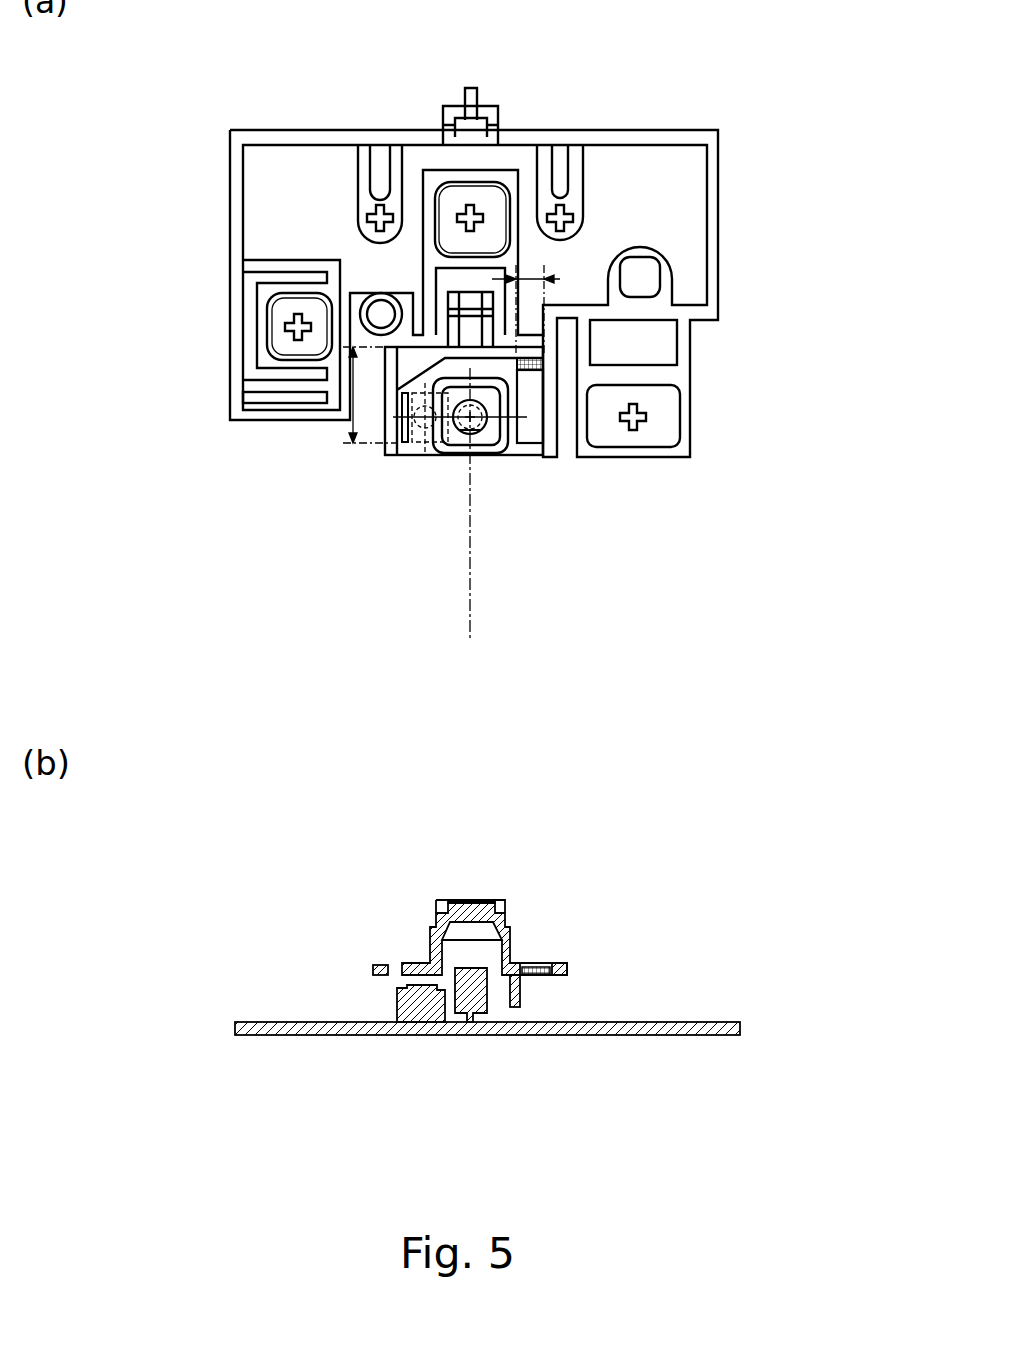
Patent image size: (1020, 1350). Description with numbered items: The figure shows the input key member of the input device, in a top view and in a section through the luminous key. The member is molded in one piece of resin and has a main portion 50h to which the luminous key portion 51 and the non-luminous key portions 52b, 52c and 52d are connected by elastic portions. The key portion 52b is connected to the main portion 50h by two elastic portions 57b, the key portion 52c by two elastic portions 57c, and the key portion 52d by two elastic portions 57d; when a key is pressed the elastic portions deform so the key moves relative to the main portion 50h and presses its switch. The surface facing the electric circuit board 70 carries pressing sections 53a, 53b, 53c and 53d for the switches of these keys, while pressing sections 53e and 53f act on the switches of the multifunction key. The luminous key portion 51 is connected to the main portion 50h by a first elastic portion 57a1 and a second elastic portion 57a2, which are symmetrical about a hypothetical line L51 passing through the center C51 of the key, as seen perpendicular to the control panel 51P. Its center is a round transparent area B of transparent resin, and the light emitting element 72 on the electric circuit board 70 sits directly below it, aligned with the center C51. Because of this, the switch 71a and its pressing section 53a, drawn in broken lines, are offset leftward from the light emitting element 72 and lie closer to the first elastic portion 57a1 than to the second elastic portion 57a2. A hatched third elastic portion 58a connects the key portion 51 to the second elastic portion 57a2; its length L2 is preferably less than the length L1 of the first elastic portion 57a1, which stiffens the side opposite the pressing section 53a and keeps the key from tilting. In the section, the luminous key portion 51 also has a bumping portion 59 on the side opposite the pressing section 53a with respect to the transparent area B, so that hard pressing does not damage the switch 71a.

The main portion 50h is at (235, 152).
The elastic portions 57d is at (430, 287).
The pressing section 53e is at (372, 215).
The key portion 52d is at (455, 203).
The pressing section 53d is at (484, 215).
The pressing section 53f is at (567, 216).
The length of third elastic portion L2 is at (534, 276).
The elastic portions 57b is at (297, 270).
The key portion 52b is at (283, 308).
The pressing section 53b is at (283, 343).
The elastic portions 57c is at (586, 347).
The key portion 52c is at (666, 398).
The pressing section 53c is at (637, 423).
The length of first elastic portion L1 is at (343, 440).
The pressing section 53a is at (418, 432).
The switch 71a is at (411, 440).
The first elastic portion 57a1 is at (392, 425).
The light emitting element 72 is at (498, 432).
The luminous key portion 51 is at (473, 445).
The center of key portion C51 is at (468, 440).
The transparent area B is at (490, 440).
The hypothetical line L51 is at (470, 613).
The second elastic portion 57a2 is at (553, 432).
The third elastic portion 58a is at (535, 372).
The control panel 51P is at (468, 900).
The bumping portion 59 is at (517, 995).
The electric circuit board 70 is at (318, 1035).